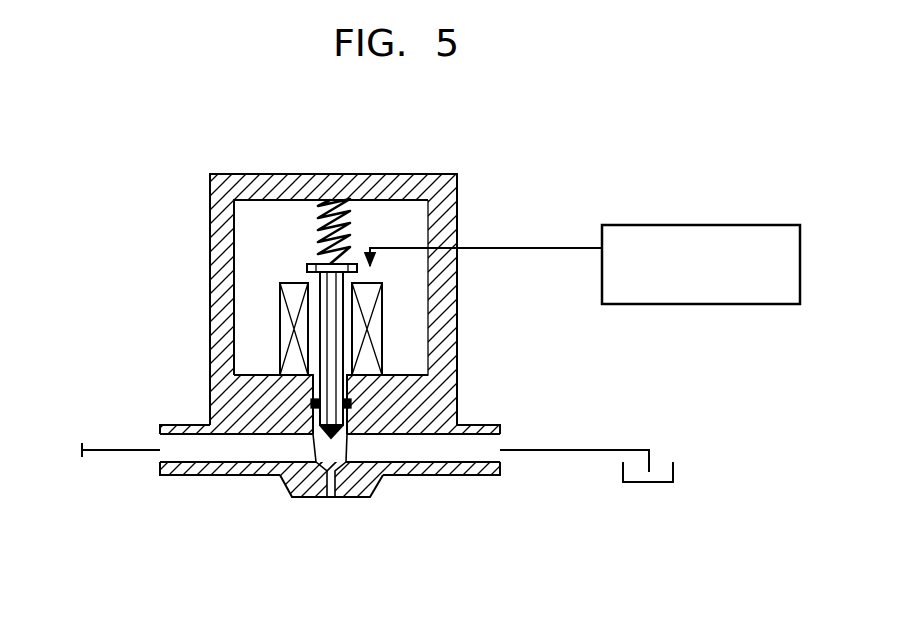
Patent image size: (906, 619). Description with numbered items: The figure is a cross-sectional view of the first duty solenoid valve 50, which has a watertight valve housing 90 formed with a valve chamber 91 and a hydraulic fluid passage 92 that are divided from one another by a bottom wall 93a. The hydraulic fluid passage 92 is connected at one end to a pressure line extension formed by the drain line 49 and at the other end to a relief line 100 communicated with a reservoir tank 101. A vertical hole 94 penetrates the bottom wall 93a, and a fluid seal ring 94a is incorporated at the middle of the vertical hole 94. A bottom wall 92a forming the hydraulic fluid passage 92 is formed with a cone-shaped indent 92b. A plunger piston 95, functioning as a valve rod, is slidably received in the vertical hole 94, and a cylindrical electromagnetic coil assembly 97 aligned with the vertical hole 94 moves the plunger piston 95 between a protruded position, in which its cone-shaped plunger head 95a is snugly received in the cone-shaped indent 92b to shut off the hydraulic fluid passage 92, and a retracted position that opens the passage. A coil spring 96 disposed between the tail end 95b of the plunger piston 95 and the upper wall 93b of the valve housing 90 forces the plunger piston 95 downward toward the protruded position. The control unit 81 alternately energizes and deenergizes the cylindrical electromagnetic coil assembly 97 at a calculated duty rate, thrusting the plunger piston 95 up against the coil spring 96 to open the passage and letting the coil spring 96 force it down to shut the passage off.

The drain line 49 is at (120, 455).
The first duty solenoid valve 50 is at (468, 196).
The control unit 81 is at (752, 225).
The valve housing 90 is at (440, 353).
The valve chamber 91 is at (248, 245).
The hydraulic fluid passage 92 is at (400, 452).
The bottom wall 92a is at (210, 475).
The cone-shaped indent 92b is at (327, 474).
The bottom wall 93a is at (400, 403).
The upper wall 93b is at (277, 174).
The vertical hole 94 is at (339, 474).
The fluid seal ring 94a is at (311, 403).
The plunger piston 95 is at (333, 327).
The cone-shaped plunger head 95a is at (330, 470).
The tail end 95b is at (307, 268).
The coil spring 96 is at (328, 200).
The cylindrical electromagnetic coil assembly 97 is at (287, 333).
The relief line 100 is at (612, 450).
The reservoir tank 101 is at (674, 472).